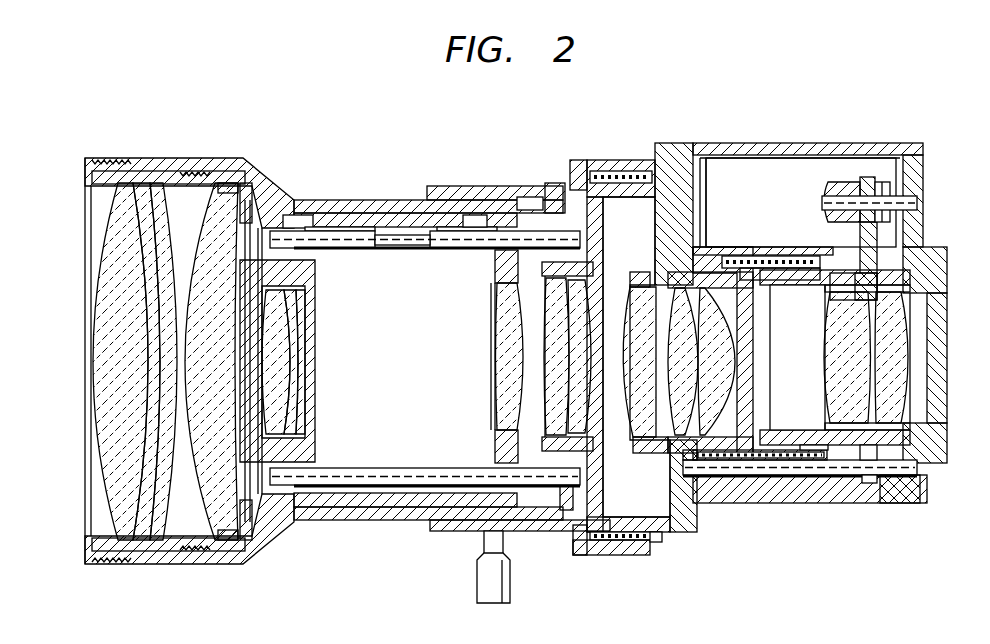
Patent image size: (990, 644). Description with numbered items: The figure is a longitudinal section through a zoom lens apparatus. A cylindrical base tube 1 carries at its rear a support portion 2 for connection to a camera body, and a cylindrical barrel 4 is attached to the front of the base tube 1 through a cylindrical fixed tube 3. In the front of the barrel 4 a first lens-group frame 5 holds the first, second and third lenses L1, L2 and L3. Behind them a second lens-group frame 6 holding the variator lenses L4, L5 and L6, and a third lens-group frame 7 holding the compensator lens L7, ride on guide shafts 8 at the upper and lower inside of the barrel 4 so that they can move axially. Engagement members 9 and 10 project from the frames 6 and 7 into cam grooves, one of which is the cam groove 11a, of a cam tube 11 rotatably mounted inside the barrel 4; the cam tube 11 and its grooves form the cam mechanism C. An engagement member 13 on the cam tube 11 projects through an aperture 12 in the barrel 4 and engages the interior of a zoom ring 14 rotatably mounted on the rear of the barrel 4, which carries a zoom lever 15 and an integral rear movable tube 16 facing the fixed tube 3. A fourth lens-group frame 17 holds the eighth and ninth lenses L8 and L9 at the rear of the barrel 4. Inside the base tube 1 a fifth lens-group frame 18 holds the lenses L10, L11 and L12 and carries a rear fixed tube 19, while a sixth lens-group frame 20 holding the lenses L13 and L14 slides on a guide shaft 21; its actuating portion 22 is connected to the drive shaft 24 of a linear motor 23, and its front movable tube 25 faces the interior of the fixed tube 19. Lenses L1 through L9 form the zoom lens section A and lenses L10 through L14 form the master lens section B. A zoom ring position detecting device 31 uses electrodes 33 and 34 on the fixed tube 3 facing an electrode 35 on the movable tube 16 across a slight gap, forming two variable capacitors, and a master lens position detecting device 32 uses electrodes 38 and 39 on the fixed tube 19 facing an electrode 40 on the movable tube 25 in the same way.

The base tube 1 is at (770, 146).
The support portion 2 is at (940, 272).
The fixed tube 3 is at (640, 183).
The barrel 4 is at (380, 208).
The first lens-group frame 5 is at (153, 172).
The second lens-group frame 6 is at (300, 282).
The third lens-group frame 7 is at (495, 274).
The guide shafts 8 is at (438, 250).
The engagement member 9 is at (301, 215).
The engagement member 10 is at (473, 215).
The cam tube 11 is at (355, 219).
The cam groove 11a is at (318, 215).
The aperture 12 is at (550, 207).
The engagement member 13 is at (530, 197).
The zoom ring 14 is at (492, 187).
The zoom lever 15 is at (477, 587).
The movable tube 16 is at (588, 160).
The fourth lens-group frame 17 is at (603, 262).
The fifth lens-group frame 18 is at (708, 267).
The fixed tube 19 is at (733, 470).
The sixth lens-group frame 20 is at (852, 280).
The guide shaft 21 is at (890, 483).
The actuating portion 22 is at (867, 177).
The linear motor 23 is at (730, 163).
The drive shaft 24 is at (917, 201).
The movable tube 25 is at (797, 260).
The zoom ring position detecting device 31 is at (593, 553).
The master lens position detecting device 32 is at (793, 452).
The electrode 33 is at (603, 172).
The electrode 34 is at (655, 537).
The electrode 35 is at (620, 553).
The electrode 38 is at (760, 483).
The electrode 39 is at (847, 473).
The electrode 40 is at (813, 457).
The zoom lens section A is at (103, 458).
The master lens section B is at (912, 394).
The cam mechanism C is at (405, 199).
The first lens L1 is at (108, 262).
The second lens L2 is at (117, 323).
The third lens L3 is at (123, 370).
The fourth lens L4 is at (290, 328).
The fifth lens L5 is at (285, 355).
The sixth lens L6 is at (303, 383).
The seventh lens L7 is at (500, 330).
The eighth lens L8 is at (550, 360).
The ninth lens L9 is at (575, 395).
The tenth lens L10 is at (633, 397).
The eleventh lens L11 is at (690, 317).
The twelfth lens L12 is at (723, 348).
The thirteenth lens L13 is at (832, 395).
The fourteenth lens L14 is at (907, 360).